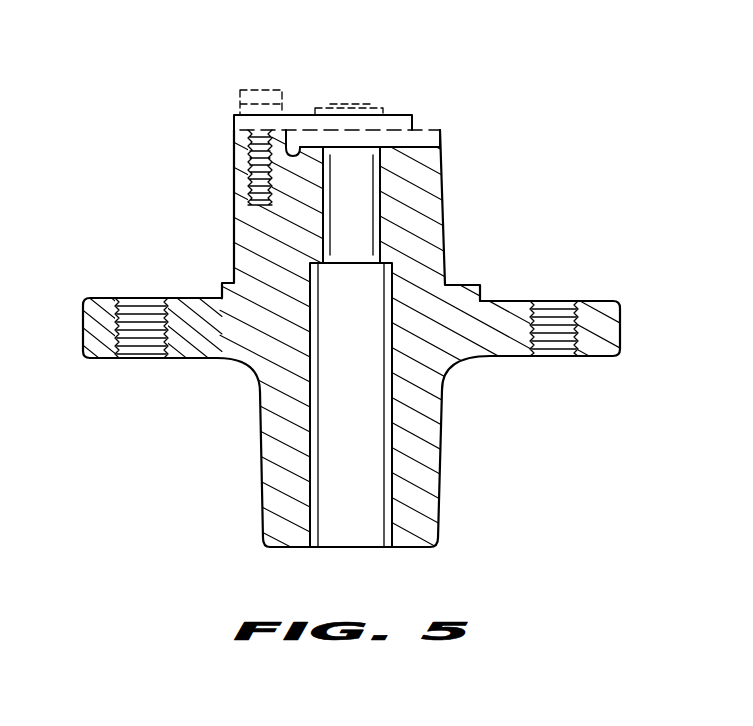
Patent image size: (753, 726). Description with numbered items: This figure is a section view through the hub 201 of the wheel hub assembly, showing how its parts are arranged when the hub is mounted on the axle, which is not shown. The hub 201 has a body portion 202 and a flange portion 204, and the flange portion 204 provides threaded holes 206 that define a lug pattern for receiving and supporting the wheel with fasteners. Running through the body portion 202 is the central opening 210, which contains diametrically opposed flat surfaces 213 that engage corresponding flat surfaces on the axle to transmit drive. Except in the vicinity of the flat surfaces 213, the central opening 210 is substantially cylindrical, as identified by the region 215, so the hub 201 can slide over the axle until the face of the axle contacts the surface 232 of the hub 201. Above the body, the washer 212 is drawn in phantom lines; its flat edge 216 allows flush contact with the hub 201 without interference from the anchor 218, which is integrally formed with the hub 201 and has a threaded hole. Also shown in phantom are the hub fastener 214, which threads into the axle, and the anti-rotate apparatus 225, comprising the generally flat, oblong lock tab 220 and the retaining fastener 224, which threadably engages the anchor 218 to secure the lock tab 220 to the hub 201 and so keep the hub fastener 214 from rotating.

The hub 201 is at (250, 376).
The body portion 202 is at (442, 457).
The flange portion 204 is at (598, 357).
The threaded holes 206 is at (133, 299).
The central opening 210 is at (362, 239).
The washer 212 is at (440, 132).
The flat surfaces 213 is at (330, 238).
The hub fastener 214 is at (348, 108).
The region 215 is at (314, 512).
The flat edge 216 is at (248, 166).
The anchor 218 is at (284, 145).
The lock tab 220 is at (404, 116).
The retaining fastener 224 is at (240, 88).
The anti-rotate apparatus 225 is at (306, 114).
The surface 232 is at (398, 282).